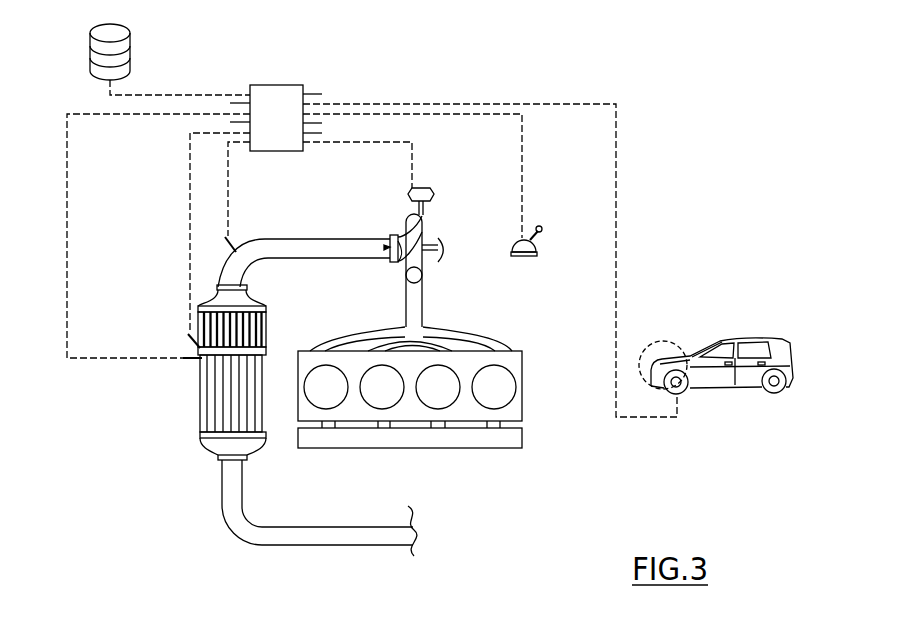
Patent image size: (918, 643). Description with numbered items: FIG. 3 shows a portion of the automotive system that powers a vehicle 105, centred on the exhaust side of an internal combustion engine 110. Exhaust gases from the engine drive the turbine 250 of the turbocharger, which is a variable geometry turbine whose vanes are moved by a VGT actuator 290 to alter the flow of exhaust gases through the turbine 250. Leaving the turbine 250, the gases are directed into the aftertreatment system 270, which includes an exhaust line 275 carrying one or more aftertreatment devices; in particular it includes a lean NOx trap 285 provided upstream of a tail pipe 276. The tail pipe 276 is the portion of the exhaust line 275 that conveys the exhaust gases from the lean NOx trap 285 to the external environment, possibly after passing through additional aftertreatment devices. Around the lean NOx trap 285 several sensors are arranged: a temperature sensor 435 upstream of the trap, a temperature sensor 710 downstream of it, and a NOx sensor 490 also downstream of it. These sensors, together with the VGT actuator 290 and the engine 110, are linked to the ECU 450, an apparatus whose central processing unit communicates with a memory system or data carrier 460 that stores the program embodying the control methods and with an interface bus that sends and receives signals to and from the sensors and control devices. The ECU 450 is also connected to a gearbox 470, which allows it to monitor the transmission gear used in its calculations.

The vehicle 105 is at (760, 402).
The internal combustion engine 110 is at (509, 414).
The turbine 250 is at (406, 226).
The aftertreatment system 270 is at (263, 448).
The exhaust line 275 is at (272, 259).
The tail pipe 276 is at (236, 535).
The lean NOx trap 285 is at (245, 332).
The VGT actuator 290 is at (408, 194).
The temperature sensor 435 is at (231, 241).
The ECU 450 is at (296, 127).
The data carrier 460 is at (90, 58).
The gearbox 470 is at (538, 248).
The NOx sensor 490 is at (192, 361).
The temperature sensor 710 is at (188, 342).